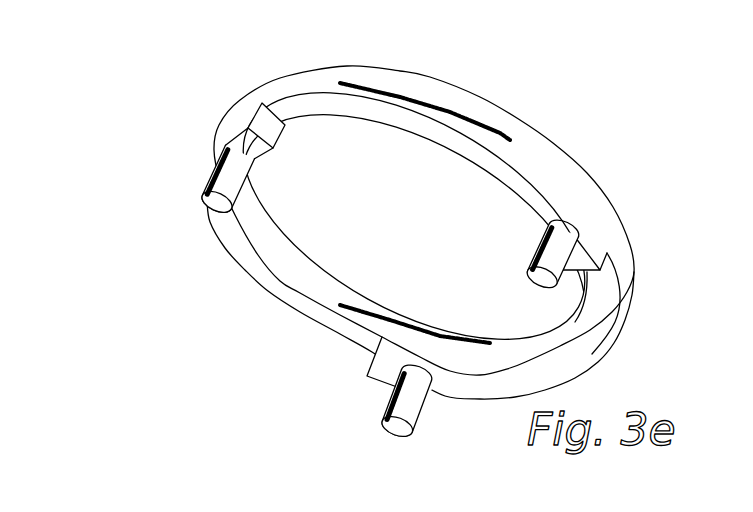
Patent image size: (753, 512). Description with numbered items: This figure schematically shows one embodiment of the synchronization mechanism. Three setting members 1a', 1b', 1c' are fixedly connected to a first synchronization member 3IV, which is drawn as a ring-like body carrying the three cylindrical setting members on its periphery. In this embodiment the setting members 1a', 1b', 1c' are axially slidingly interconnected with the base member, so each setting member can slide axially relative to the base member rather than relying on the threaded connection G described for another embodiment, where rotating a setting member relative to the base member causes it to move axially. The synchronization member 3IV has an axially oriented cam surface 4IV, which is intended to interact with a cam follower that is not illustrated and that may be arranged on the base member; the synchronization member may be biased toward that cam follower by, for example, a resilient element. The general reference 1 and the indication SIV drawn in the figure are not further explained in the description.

The sensor system SIV is at (380, 247).
The ring-shaped device 1 is at (387, 206).
The first synchronization member 3IV is at (409, 226).
The axially oriented cam surface 4IV is at (409, 299).
The setting member 1a' is at (193, 160).
The setting member 1b' is at (613, 227).
The setting member 1c' is at (433, 429).
The threaded connection G is at (392, 400).